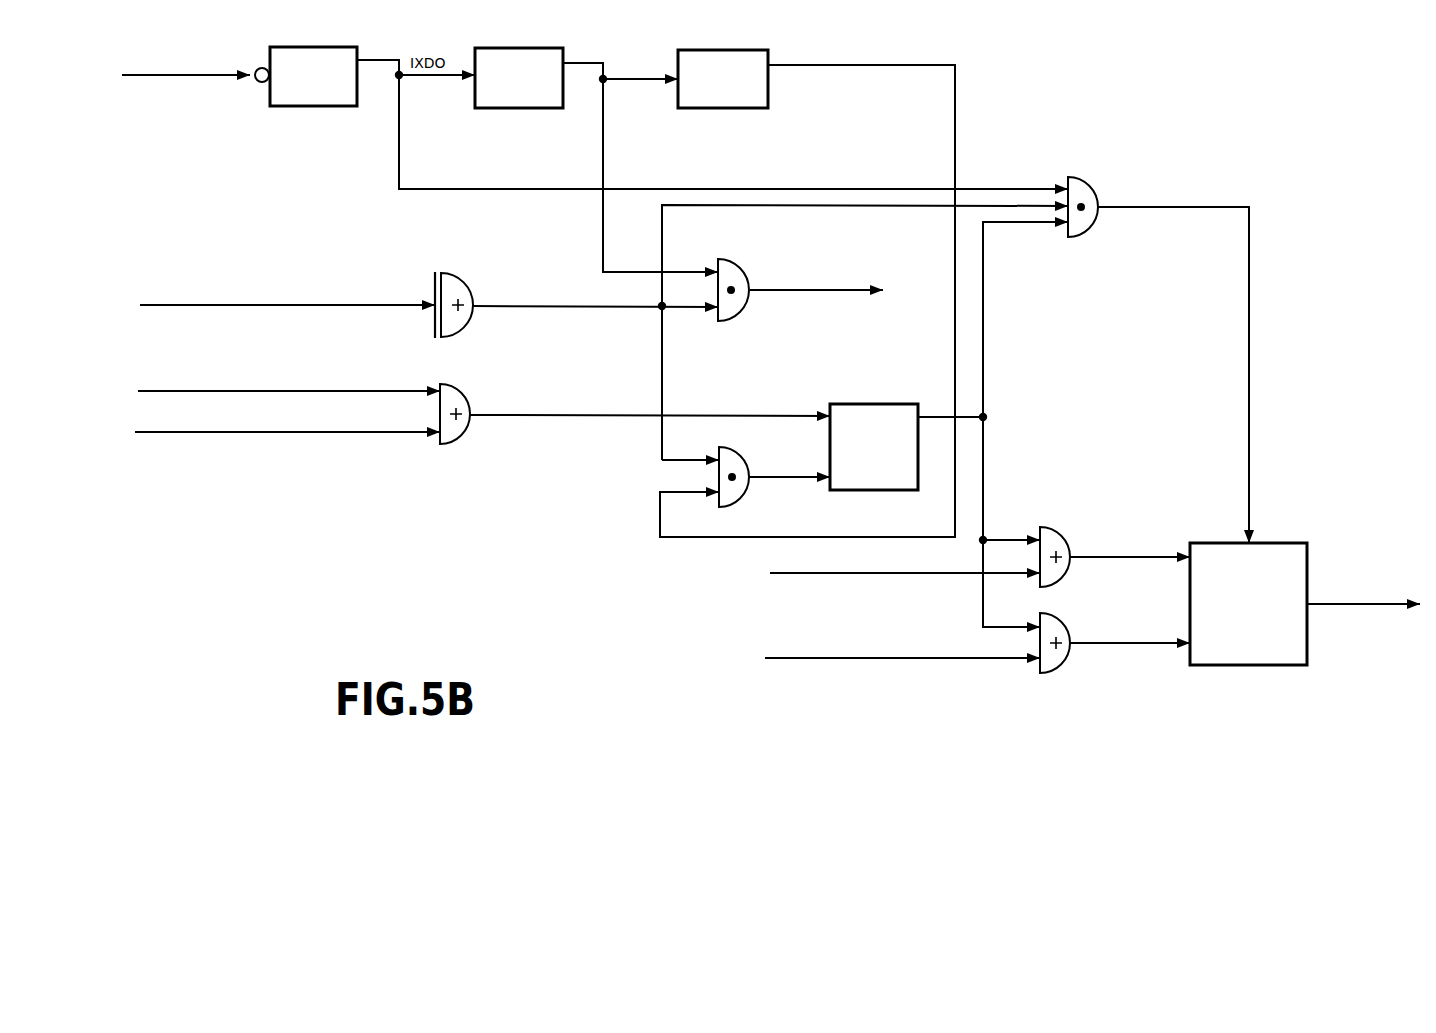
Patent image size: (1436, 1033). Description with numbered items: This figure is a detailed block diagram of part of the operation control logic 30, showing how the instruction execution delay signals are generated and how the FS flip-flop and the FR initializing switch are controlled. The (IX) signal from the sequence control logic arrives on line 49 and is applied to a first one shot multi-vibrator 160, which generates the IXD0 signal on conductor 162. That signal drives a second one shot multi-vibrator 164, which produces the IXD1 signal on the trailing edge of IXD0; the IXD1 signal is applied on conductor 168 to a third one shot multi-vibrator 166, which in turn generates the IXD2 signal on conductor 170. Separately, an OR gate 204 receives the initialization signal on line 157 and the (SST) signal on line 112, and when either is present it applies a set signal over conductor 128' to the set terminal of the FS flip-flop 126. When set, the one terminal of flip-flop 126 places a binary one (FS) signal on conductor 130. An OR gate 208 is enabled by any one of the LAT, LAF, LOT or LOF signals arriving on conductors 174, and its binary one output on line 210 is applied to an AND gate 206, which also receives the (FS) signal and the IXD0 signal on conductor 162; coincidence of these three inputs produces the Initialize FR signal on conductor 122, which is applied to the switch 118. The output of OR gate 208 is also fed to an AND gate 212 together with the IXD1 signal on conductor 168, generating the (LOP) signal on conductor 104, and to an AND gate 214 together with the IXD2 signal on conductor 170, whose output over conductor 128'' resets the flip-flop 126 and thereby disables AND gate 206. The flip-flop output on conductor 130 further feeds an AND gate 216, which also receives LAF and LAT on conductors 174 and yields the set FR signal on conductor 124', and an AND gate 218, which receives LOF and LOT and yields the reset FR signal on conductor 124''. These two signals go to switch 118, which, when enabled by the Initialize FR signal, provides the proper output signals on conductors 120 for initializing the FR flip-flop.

The operation control logic 30 is at (160, 350).
The line 49 is at (210, 83).
The conductor 104 is at (852, 291).
The line 112 is at (247, 434).
The switch 118 is at (1306, 541).
The conductors 120 is at (1372, 608).
The conductor 122 is at (1180, 209).
The conductor 124' is at (1130, 562).
The conductor 124'' is at (1130, 653).
The FS flip-flop 126 is at (878, 403).
The conductor 128' is at (745, 399).
The conductor 128'' is at (789, 497).
The conductor 130 is at (985, 310).
The line 157 is at (395, 386).
The first one shot multi-vibrator 160 is at (322, 40).
The conductor 162 is at (402, 144).
The second one shot multi-vibrator 164 is at (534, 34).
The third one shot multi-vibrator 166 is at (738, 49).
The conductor 168 is at (580, 62).
The conductor 170 is at (955, 65).
The conductors 174 is at (272, 306).
The OR gate 204 is at (462, 389).
The AND gate 206 is at (1086, 179).
The OR gate 208 is at (463, 282).
The line 210 is at (904, 205).
The AND gate 212 is at (741, 265).
The AND gate 214 is at (751, 462).
The AND gate 216 is at (1056, 527).
The AND gate 218 is at (1048, 675).